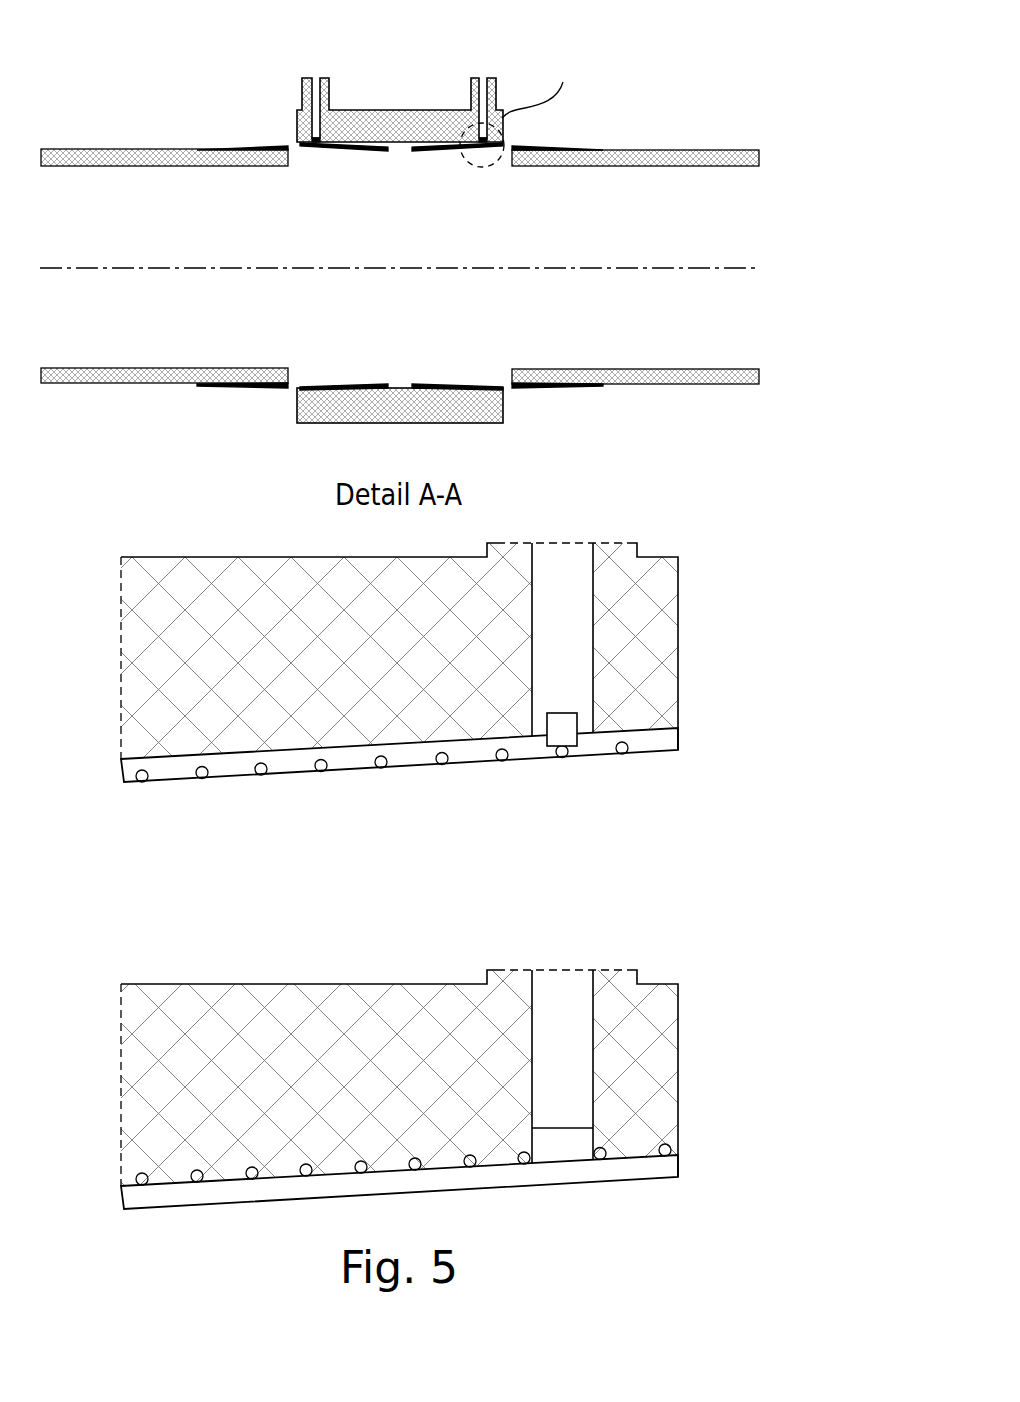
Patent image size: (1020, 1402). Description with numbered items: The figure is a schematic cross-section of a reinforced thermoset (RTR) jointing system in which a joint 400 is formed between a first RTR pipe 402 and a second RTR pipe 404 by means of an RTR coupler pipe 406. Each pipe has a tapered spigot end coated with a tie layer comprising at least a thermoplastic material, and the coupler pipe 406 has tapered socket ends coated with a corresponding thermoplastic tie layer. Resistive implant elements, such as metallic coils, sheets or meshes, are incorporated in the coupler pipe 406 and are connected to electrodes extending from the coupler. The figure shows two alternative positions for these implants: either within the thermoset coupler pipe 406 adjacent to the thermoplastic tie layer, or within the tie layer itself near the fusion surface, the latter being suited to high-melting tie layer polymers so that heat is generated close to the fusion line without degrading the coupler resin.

The joint 400 is at (461, 219).
The first RTR pipe 402 is at (141, 148).
The second plate 404 is at (682, 148).
The RTR coupler pipe 406 is at (400, 108).